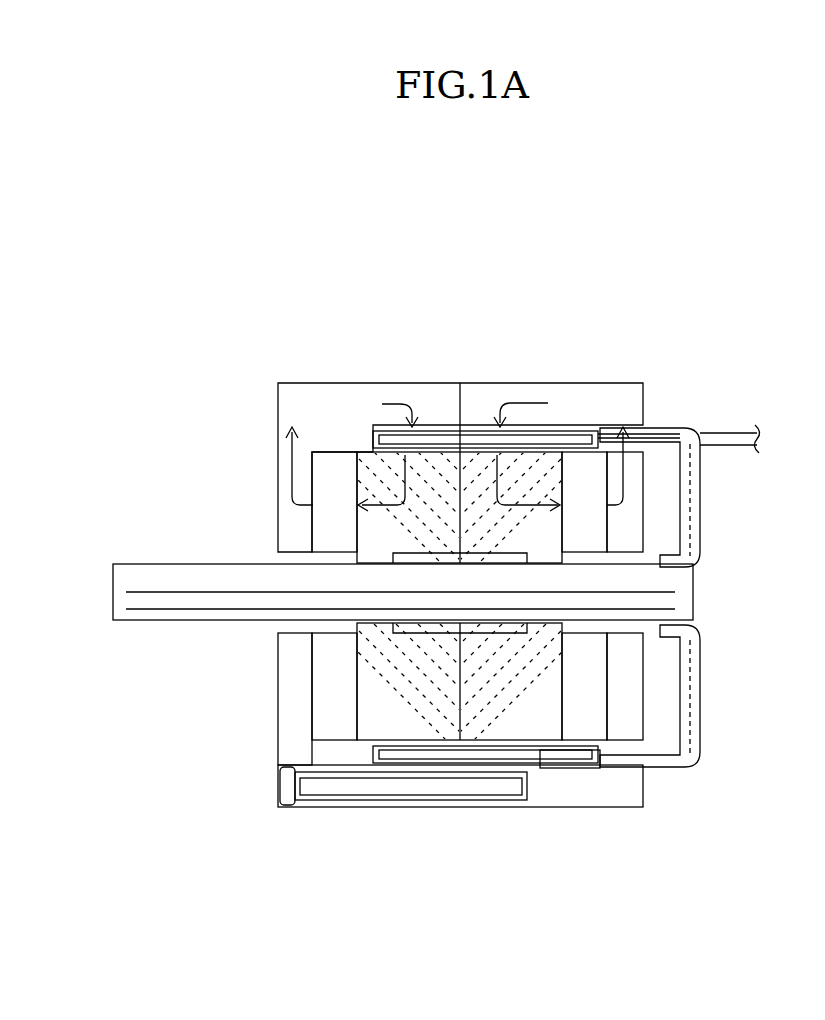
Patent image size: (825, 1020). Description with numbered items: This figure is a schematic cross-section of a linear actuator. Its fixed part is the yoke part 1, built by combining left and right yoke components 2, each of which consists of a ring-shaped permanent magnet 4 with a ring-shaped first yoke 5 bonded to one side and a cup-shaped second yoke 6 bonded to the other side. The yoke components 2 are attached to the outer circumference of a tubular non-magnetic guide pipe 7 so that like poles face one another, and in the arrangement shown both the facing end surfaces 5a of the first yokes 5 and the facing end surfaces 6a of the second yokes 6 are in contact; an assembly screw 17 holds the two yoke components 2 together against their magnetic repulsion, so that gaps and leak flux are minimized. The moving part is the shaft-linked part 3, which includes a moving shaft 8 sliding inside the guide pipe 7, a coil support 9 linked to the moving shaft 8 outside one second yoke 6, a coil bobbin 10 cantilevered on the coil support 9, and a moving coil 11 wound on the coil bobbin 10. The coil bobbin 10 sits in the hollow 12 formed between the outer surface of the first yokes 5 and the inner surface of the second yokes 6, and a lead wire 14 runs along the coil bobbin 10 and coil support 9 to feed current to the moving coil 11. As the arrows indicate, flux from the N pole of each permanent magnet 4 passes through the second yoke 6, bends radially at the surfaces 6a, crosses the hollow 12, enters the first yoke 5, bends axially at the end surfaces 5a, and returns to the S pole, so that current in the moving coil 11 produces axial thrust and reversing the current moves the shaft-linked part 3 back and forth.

The yoke part 1 is at (475, 238).
The yoke component 2 is at (263, 253).
The shaft-linked part 3 is at (753, 703).
The permanent magnet 4 is at (342, 465).
The first yoke 5 is at (367, 460).
The end surface of first yoke 5a is at (461, 463).
The second yoke 6 is at (300, 397).
The end surface of second yoke 6a is at (462, 397).
The guide pipe 7 is at (372, 560).
The moving shaft 8 is at (680, 592).
The coil support 9 is at (700, 530).
The coil bobbin 10 is at (383, 433).
The moving coil 11 is at (530, 760).
The hollow 12 is at (280, 387).
The lead wire 14 is at (727, 435).
The assembly screw 17 is at (413, 790).